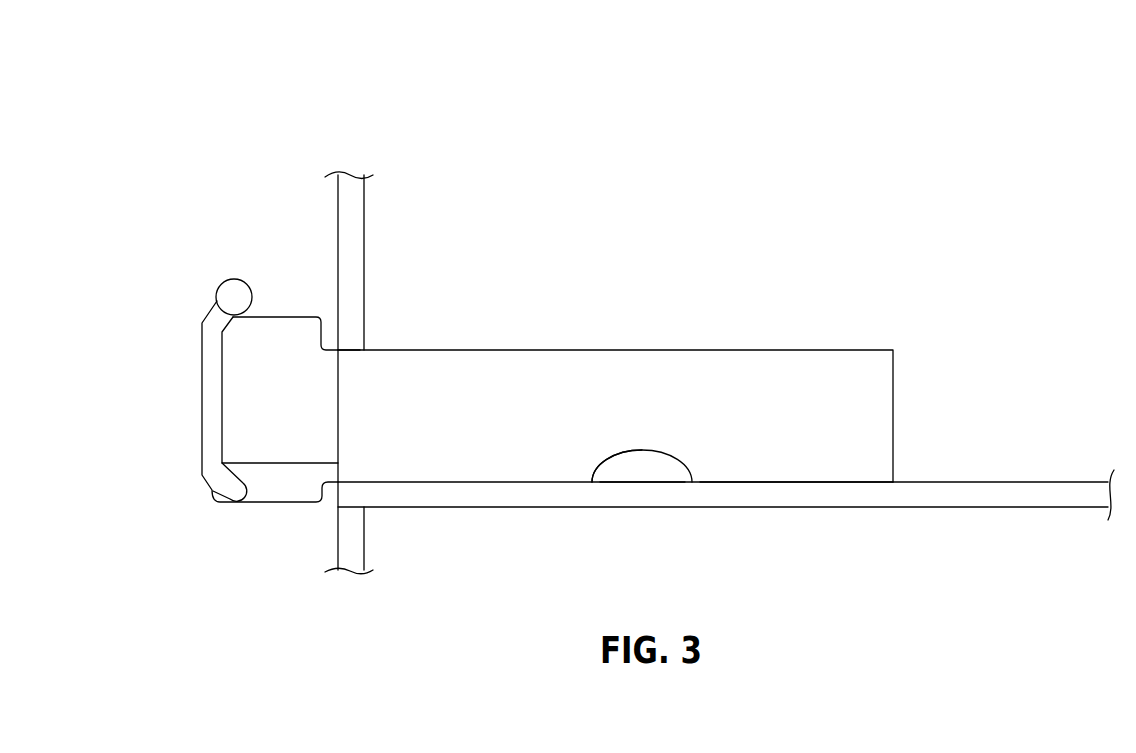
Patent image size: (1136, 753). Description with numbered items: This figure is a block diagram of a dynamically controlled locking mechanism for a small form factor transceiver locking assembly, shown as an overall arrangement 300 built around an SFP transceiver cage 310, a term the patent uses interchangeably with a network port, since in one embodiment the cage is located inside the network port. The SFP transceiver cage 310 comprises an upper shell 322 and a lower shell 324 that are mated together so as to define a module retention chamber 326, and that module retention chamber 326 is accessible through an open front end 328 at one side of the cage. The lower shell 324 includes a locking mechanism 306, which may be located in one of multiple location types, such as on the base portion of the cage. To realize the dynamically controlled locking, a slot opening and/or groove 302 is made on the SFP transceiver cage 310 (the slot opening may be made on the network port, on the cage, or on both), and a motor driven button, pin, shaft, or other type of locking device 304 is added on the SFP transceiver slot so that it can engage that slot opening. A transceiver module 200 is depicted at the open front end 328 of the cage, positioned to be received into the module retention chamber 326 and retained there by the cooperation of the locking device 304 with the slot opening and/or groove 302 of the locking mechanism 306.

The mounting assembly 300 is at (978, 142).
The SFP transceiver cage 310 is at (242, 108).
The clip 200 is at (295, 323).
The slot opening and/or groove 302 is at (647, 450).
The locking device 304 is at (642, 468).
The locking mechanism 306 is at (605, 462).
The upper shell 322 is at (712, 349).
The lower shell 324 is at (788, 465).
The module retention chamber 326 is at (837, 370).
The open front end 328 is at (340, 382).